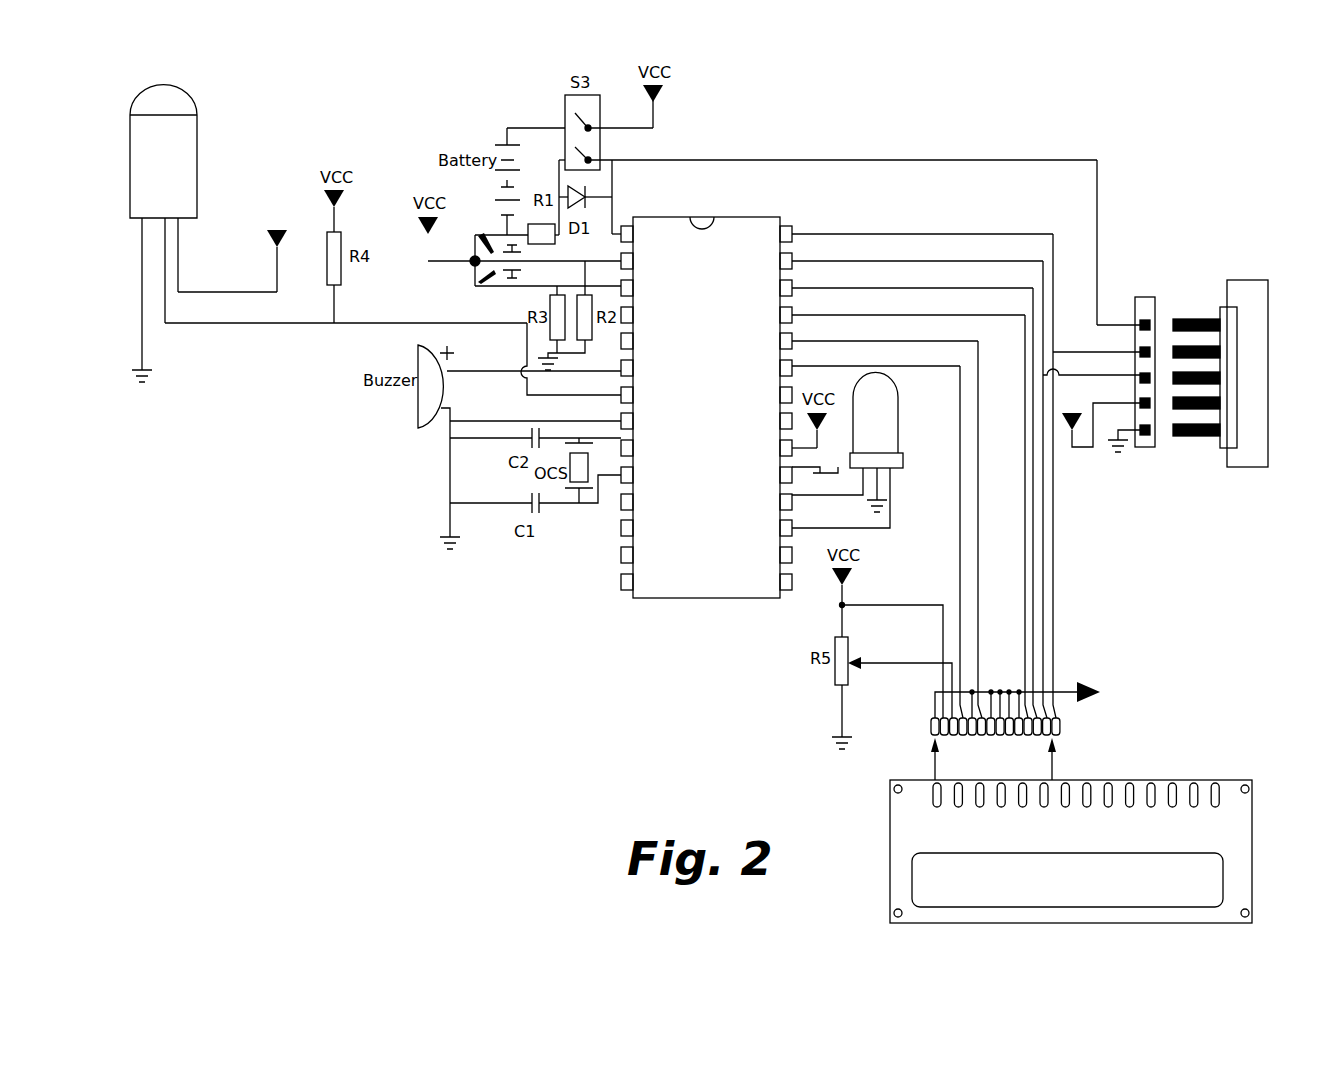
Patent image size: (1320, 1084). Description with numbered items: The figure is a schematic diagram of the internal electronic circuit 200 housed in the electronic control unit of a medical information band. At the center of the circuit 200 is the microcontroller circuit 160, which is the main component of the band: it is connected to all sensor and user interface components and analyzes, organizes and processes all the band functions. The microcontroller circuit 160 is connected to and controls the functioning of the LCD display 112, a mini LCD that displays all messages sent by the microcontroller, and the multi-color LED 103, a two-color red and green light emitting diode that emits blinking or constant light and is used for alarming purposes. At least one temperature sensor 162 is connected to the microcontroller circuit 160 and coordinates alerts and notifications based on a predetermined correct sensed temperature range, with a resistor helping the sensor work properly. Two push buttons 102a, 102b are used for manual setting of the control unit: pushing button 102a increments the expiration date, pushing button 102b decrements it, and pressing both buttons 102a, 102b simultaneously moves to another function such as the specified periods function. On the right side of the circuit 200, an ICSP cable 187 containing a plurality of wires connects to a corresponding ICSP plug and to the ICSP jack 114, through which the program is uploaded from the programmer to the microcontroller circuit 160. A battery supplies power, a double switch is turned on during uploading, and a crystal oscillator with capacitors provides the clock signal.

The internal electronic circuit 200 is at (1135, 195).
The temperature sensor 162 is at (195, 167).
The push button 102a is at (480, 238).
The push button 102b is at (478, 281).
The microcontroller circuit 160 is at (707, 598).
The multi-color LED 103 is at (892, 440).
The LCD display 112 is at (932, 897).
The ICSP jack 114 is at (1147, 447).
The ICSP cable 187 is at (1248, 467).